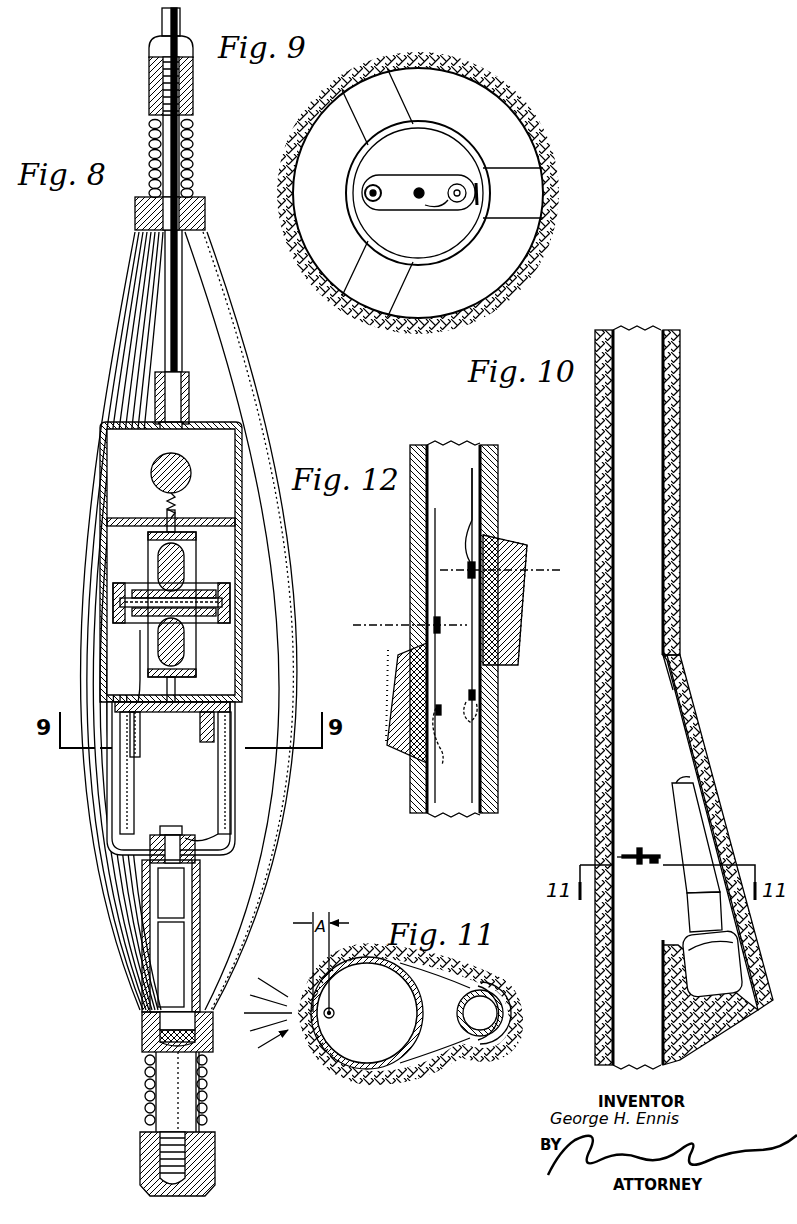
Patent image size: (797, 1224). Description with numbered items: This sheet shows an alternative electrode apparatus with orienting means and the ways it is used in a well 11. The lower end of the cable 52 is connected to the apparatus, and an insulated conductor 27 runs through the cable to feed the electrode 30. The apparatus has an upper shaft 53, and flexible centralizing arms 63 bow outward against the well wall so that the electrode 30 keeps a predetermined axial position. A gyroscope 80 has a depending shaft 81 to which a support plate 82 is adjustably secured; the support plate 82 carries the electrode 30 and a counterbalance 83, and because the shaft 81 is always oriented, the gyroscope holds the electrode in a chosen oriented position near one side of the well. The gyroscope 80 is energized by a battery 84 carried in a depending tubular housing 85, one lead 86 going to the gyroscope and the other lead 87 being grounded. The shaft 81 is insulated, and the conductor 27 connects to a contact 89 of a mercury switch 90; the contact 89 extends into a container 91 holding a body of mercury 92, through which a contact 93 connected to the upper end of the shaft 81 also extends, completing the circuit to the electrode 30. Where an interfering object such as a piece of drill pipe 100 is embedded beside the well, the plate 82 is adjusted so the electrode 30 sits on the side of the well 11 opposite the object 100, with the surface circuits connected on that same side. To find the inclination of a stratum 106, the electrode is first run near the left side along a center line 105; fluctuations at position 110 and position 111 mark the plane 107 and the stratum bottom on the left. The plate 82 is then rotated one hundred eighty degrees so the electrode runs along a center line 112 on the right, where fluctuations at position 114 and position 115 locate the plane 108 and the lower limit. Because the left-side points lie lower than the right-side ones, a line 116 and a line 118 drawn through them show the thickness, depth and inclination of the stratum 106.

In FIG. 10, the well 11 is at (672, 444).
In FIG. 11, the well 11 is at (345, 1066).
In FIG. 8, the conductor 27 is at (158, 394).
In FIG. 8, the electrode 30 is at (136, 805).
In FIG. 9, the electrode 30 is at (362, 205).
In FIG. 10, the electrode 30 is at (630, 870).
In FIG. 11, the electrode 30 is at (313, 1016).
In FIG. 8, the cable 52 is at (160, 18).
In FIG. 8, the upper shaft 53 is at (166, 290).
In FIG. 8, the centralizing arms 63 is at (252, 410).
In FIG. 9, the centralizing arms 63 is at (330, 92).
In FIG. 8, the gyroscope 80 is at (215, 563).
In FIG. 8, the depending shaft 81 is at (165, 524).
In FIG. 9, the depending shaft 81 is at (419, 200).
In FIG. 8, the support plate 82 is at (145, 715).
In FIG. 9, the support plate 82 is at (442, 204).
In FIG. 8, the counterbalance 83 is at (216, 737).
In FIG. 9, the counterbalance 83 is at (456, 180).
In FIG. 8, the battery 84 is at (170, 942).
In FIG. 8, the depending tubular housing 85 is at (165, 978).
In FIG. 8, the lead 86 is at (225, 830).
In FIG. 9, the lead 86 is at (476, 206).
In FIG. 8, the lead 87 is at (150, 1040).
In FIG. 8, the contact 89 is at (193, 440).
In FIG. 8, the mercury switch 90 is at (202, 463).
In FIG. 8, the container 91 is at (153, 466).
In FIG. 8, the body of mercury 92 is at (165, 491).
In FIG. 8, the contact 93 is at (180, 500).
In FIG. 10, the drill pipe 100 is at (690, 820).
In FIG. 11, the drill pipe 100 is at (474, 1046).
In FIG. 12, the center line 105 is at (432, 545).
In FIG. 12, the stratum 106 is at (495, 628).
In FIG. 12, the plane 107 is at (398, 630).
In FIG. 12, the plane 108 is at (478, 540).
In FIG. 12, the position 110 is at (434, 620).
In FIG. 12, the position 111 is at (420, 765).
In FIG. 12, the center line 112 is at (476, 740).
In FIG. 12, the position 114 is at (482, 500).
In FIG. 12, the position 115 is at (480, 700).
In FIG. 12, the line 116 is at (478, 565).
In FIG. 12, the line 118 is at (478, 700).